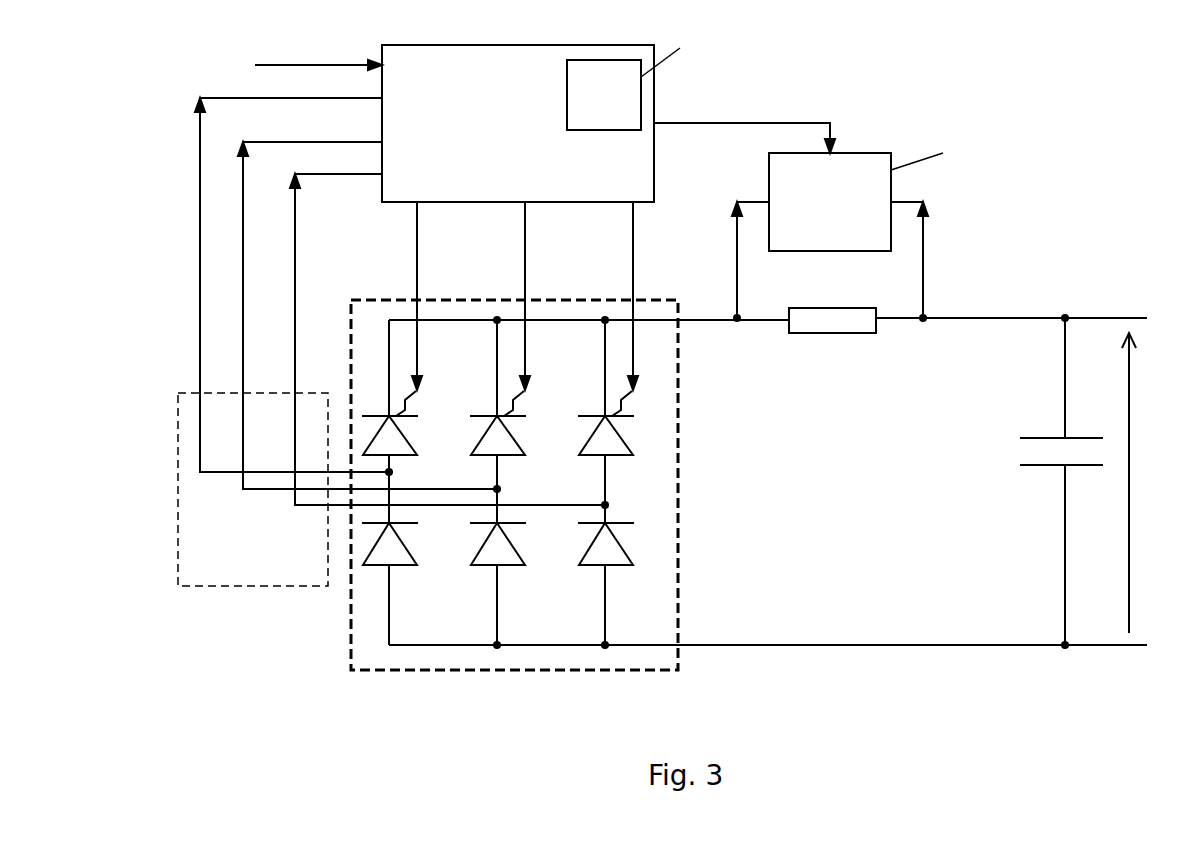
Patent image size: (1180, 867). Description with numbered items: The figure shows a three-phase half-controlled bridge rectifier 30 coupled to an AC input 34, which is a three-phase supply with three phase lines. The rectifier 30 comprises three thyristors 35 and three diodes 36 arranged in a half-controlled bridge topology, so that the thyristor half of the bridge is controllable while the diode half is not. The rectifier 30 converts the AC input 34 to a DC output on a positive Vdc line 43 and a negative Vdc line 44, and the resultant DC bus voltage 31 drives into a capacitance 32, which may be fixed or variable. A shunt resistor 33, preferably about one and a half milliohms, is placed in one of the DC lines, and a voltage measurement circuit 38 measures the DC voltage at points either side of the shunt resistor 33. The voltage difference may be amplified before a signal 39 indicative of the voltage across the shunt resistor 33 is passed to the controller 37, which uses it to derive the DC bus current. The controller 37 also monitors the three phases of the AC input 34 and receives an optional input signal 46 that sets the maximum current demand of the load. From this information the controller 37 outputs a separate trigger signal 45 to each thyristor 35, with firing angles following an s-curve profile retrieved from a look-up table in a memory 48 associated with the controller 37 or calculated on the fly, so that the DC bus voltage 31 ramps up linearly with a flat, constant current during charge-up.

The rectifier 30 is at (380, 662).
The DC bus voltage 31 is at (1145, 483).
The capacitance 32 is at (1043, 481).
The shunt resistor 33 is at (832, 334).
The AC input 34 is at (211, 568).
The thyristor 35 is at (505, 423).
The diode 36 is at (506, 544).
The controller 37 is at (420, 192).
The voltage measurement circuit 38 is at (806, 242).
The signal indicative of the voltage across the shunt resistor 39 is at (744, 126).
The positive Vdc 43 is at (768, 306).
The negative Vdc line 44 is at (768, 657).
The trigger signal 45 is at (535, 296).
The maximum current demand input signal 46 is at (302, 66).
The memory 48 is at (603, 121).